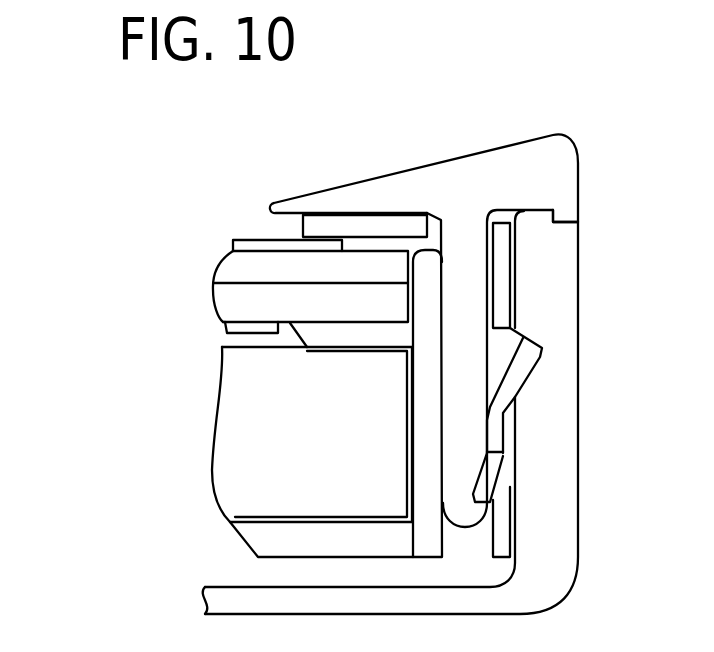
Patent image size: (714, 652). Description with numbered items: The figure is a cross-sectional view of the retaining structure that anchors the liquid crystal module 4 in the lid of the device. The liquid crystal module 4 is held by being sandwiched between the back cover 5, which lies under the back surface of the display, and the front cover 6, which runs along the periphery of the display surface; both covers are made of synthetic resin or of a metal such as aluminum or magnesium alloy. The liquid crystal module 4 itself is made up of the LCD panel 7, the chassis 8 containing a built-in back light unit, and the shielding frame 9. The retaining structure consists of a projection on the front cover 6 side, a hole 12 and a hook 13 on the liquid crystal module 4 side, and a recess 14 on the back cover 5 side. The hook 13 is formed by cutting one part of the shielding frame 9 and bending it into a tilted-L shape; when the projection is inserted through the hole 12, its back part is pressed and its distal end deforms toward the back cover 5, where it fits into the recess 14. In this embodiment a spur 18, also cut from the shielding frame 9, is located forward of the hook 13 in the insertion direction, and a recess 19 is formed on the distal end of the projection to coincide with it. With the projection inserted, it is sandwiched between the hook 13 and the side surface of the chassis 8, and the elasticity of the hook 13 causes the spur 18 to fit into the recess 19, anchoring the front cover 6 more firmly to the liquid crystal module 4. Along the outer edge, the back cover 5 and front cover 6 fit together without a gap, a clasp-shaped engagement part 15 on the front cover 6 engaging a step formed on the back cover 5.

The liquid crystal module 4 is at (148, 428).
The back cover 5 is at (562, 551).
The front cover 6 is at (505, 146).
The LCD panel 7 is at (237, 302).
The chassis 8 is at (262, 540).
The shielding frame 9 is at (359, 224).
The hole 12 is at (441, 219).
The hook 13 is at (518, 372).
The recess 14 is at (533, 347).
The engagement part 15 is at (563, 226).
The spur 18 is at (485, 470).
The recess 19 is at (475, 497).